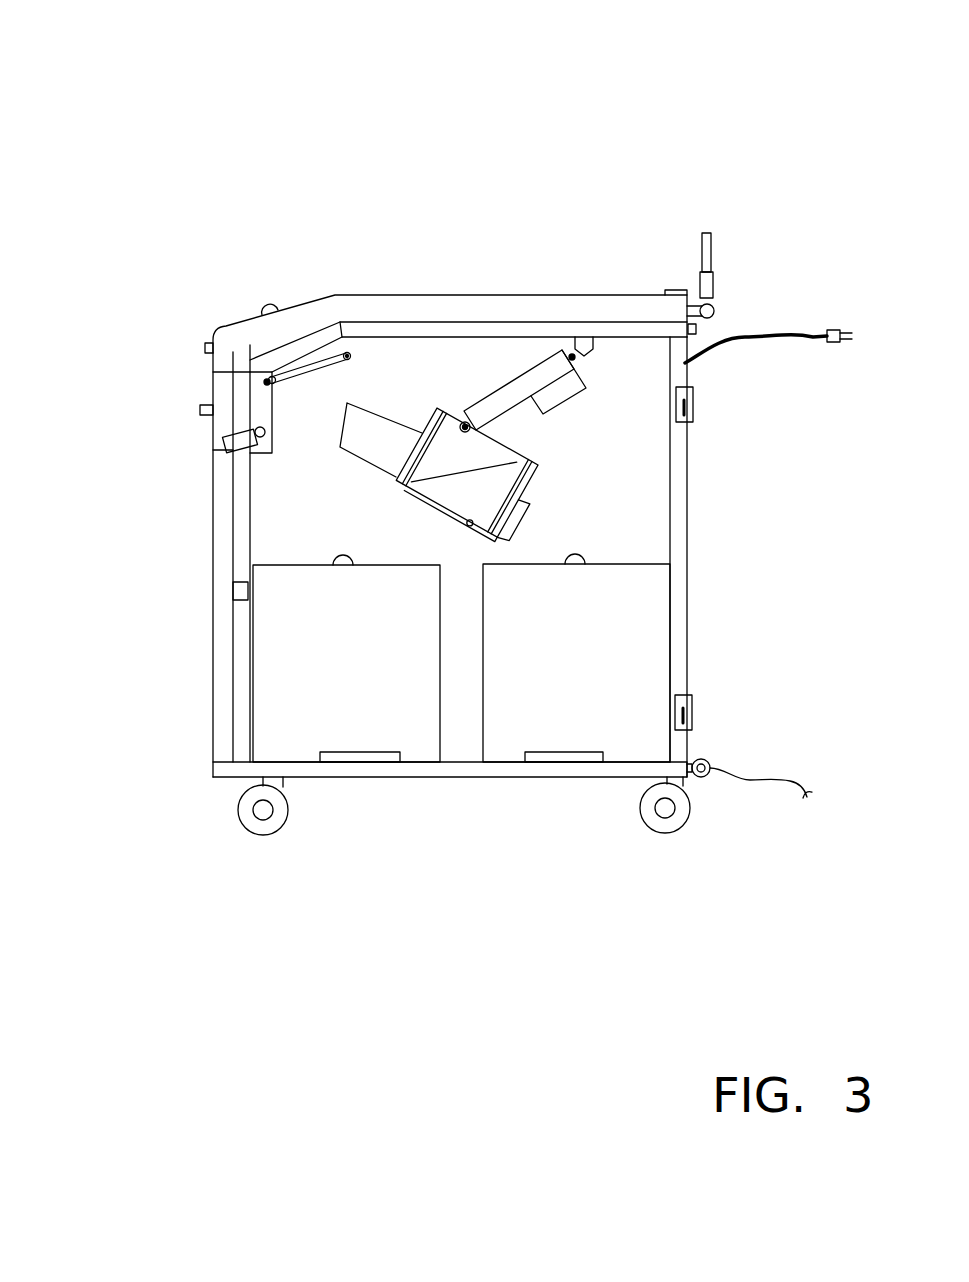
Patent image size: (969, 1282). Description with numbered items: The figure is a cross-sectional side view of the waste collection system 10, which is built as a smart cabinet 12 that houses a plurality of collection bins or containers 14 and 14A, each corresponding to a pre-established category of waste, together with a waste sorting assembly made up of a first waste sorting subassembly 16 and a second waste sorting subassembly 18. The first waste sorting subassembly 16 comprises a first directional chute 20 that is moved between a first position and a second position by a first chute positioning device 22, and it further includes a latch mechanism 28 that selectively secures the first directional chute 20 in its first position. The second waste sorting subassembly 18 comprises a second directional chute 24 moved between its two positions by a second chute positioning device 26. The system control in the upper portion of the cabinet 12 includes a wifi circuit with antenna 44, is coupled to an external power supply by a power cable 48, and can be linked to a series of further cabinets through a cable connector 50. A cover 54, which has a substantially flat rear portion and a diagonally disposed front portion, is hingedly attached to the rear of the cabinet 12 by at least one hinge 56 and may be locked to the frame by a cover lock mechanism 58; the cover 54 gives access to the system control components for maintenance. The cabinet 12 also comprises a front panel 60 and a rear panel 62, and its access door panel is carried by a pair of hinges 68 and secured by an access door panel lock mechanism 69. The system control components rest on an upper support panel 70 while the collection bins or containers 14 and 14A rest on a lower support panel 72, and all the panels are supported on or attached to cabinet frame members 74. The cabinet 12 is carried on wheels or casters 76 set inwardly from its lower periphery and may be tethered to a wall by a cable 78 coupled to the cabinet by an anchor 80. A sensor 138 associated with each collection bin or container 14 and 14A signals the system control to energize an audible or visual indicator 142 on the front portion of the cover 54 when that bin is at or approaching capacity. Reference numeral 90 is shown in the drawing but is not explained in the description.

The waste collection system 10 is at (447, 143).
The smart cabinet 12 is at (190, 716).
The collection bin or container 14 is at (412, 698).
The collection bin or container 14A is at (600, 663).
The first waste sorting subassembly 16 is at (265, 362).
The second waste sorting subassembly 18 is at (534, 356).
The first directional chute 20 is at (284, 433).
The first chute positioning device 22 is at (310, 343).
The second directional chute 24 is at (443, 515).
The second chute positioning device 26 is at (472, 370).
The latch mechanism 28 is at (227, 449).
The wifi circuit with antenna 44 is at (707, 278).
The power cable 48 is at (815, 342).
The cable connector 50 is at (697, 328).
The cover 54 is at (583, 308).
The hinge 56 is at (676, 293).
The cover lock mechanism 58 is at (207, 348).
The front panel 60 is at (210, 745).
The rear panel 62 is at (687, 575).
The hinge 68 is at (686, 405).
The access door panel lock mechanism 69 is at (237, 593).
The upper support panel 70 is at (350, 322).
The lower support panel 72 is at (450, 757).
The cabinet frame member 74 is at (478, 337).
The wheel or caster 76 is at (273, 813).
The cable 78 is at (786, 782).
The anchor 80 is at (712, 765).
The knob fastener 90 is at (200, 410).
The sensor 138 is at (365, 757).
The audible or visual indicator 142 is at (270, 305).